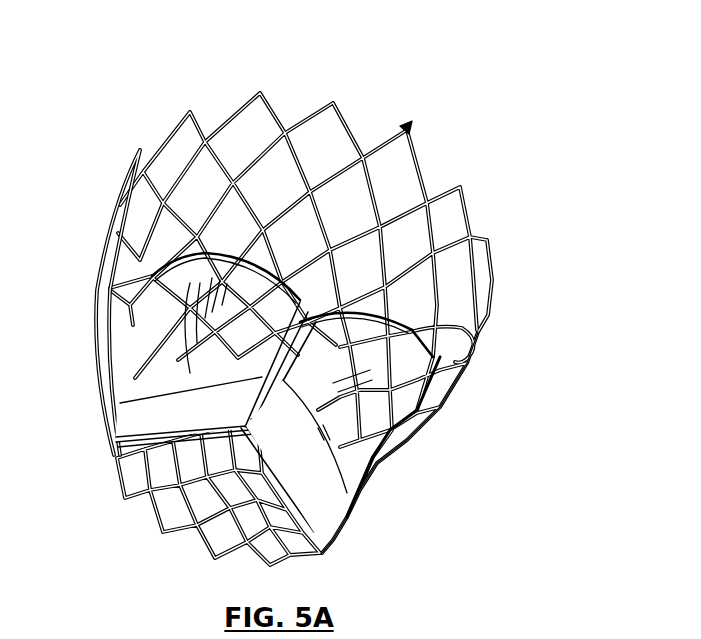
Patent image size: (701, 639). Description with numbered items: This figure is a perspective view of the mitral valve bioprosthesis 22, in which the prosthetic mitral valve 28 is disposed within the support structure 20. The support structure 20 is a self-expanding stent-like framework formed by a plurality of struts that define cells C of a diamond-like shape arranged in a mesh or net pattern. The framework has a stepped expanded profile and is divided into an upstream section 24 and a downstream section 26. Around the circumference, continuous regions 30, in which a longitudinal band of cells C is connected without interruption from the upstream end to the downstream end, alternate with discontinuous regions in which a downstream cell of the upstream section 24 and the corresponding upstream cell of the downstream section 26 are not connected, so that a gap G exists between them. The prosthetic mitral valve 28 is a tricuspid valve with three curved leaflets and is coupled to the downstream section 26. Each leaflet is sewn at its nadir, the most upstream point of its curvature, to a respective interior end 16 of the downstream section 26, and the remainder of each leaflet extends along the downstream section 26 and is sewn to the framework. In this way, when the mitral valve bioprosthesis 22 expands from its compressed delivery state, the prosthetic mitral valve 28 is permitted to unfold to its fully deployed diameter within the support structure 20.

The support structure 20 is at (327, 112).
The mitral valve bioprosthesis 22 is at (540, 284).
The upstream section 24 is at (112, 200).
The downstream section 26 is at (156, 512).
The prosthetic mitral valve 28 is at (347, 487).
The continuous region 30 is at (342, 276).
The interior end 16 is at (418, 330).
The gap G is at (180, 246).
The cell C is at (233, 152).